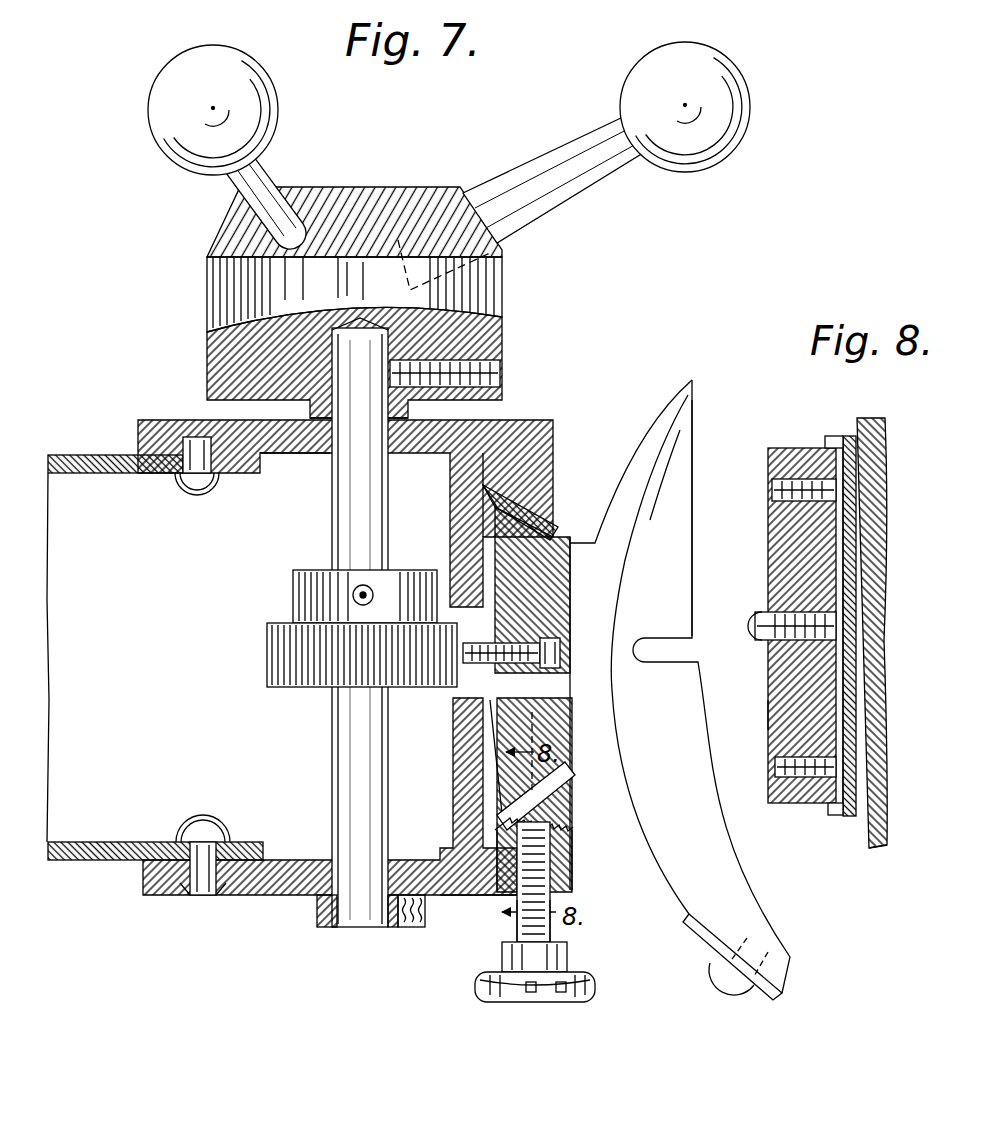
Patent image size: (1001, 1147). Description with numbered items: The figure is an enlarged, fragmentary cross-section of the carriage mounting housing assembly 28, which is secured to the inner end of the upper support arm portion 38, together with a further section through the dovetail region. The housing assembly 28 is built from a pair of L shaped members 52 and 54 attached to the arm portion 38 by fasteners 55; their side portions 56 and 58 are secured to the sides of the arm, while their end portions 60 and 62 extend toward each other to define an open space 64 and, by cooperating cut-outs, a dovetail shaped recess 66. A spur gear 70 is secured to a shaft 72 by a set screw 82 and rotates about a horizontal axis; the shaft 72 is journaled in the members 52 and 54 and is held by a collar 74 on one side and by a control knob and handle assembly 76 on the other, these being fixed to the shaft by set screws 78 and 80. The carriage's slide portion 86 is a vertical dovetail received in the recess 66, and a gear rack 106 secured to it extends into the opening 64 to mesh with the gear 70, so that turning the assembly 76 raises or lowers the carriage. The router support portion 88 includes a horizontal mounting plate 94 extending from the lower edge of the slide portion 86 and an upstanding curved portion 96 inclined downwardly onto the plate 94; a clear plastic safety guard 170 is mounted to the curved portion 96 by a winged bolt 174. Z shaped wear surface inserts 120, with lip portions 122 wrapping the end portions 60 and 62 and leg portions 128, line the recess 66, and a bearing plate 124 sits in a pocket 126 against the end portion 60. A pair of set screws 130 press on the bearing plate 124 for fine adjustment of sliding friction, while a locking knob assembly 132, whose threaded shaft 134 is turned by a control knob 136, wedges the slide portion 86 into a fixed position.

In FIG. 7, the carriage mounting housing assembly 28 is at (243, 900).
In FIG. 7, the upper support arm portion 38 is at (83, 476).
In FIG. 7, the L shaped member 52 is at (457, 899).
In FIG. 8, the L shaped member 52 is at (766, 561).
In FIG. 7, the L shaped member 54 is at (512, 408).
In FIG. 7, the fasteners 55 is at (200, 493).
In FIG. 7, the side portion 56 is at (300, 820).
In FIG. 7, the side portion 58 is at (286, 456).
In FIG. 7, the end portion 60 is at (560, 856).
In FIG. 8, the end portion 60 is at (768, 713).
In FIG. 7, the end portion 62 is at (554, 421).
In FIG. 7, the open space 64 is at (566, 538).
In FIG. 7, the dovetail shaped recess 66 is at (485, 490).
In FIG. 7, the spur gear 70 is at (268, 660).
In FIG. 7, the shaft 72 is at (334, 516).
In FIG. 7, the collar 74 is at (320, 928).
In FIG. 7, the control knob and handle assembly 76 is at (506, 283).
In FIG. 7, the set screw 78 is at (420, 929).
In FIG. 7, the set screw 80 is at (492, 365).
In FIG. 7, the set screw 82 is at (356, 588).
In FIG. 7, the slide portion 86 is at (568, 618).
In FIG. 8, the slide portion 86 is at (878, 850).
In FIG. 7, the router support portion 88 is at (658, 408).
In FIG. 7, the mounting plate 94 is at (688, 470).
In FIG. 7, the upstanding curved portion 96 is at (680, 437).
In FIG. 7, the gear rack 106 is at (492, 690).
In FIG. 7, the wear surface inserts 120 is at (480, 523).
In FIG. 8, the wear surface inserts 120 is at (856, 545).
In FIG. 8, the lip portions 122 is at (840, 436).
In FIG. 7, the bearing plate 124 is at (554, 822).
In FIG. 8, the bearing plate 124 is at (856, 568).
In FIG. 8, the pocket 126 is at (849, 433).
In FIG. 7, the leg portions 128 is at (560, 530).
In FIG. 8, the set screws 130 is at (778, 502).
In FIG. 7, the locking knob assembly 132 is at (496, 950).
In FIG. 7, the threaded shaft 134 is at (548, 934).
In FIG. 8, the threaded shaft 134 is at (756, 624).
In FIG. 7, the control knob 136 is at (600, 984).
In FIG. 7, the safety guard 170 is at (690, 943).
In FIG. 7, the winged bolt 174 is at (736, 1001).